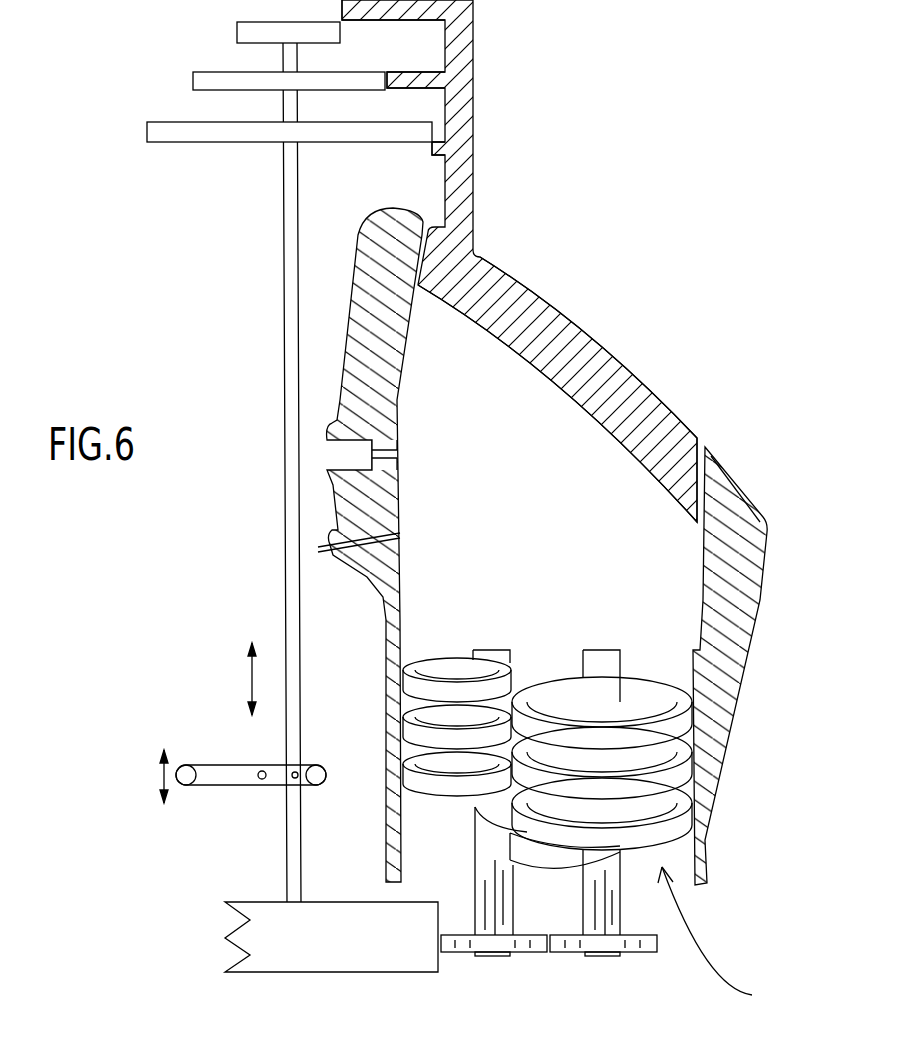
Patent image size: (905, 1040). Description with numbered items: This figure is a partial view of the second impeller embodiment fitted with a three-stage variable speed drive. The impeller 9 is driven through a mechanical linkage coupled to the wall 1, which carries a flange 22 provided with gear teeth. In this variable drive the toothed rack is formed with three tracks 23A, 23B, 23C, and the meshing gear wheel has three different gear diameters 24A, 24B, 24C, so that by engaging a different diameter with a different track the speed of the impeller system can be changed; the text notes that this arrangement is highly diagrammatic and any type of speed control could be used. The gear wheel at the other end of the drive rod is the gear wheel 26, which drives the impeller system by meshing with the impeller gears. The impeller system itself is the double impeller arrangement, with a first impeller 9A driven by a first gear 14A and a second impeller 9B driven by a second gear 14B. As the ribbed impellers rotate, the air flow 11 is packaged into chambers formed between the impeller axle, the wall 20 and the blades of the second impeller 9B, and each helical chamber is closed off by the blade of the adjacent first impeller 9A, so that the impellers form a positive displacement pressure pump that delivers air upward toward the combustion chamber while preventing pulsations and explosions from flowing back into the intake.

The wall 1 is at (565, 320).
The impeller 9 is at (581, 762).
The first impeller 9A is at (442, 667).
The second impeller 9B is at (601, 755).
The air flow 11 is at (719, 940).
The first gear 14A is at (527, 950).
The second gear 14B is at (653, 952).
The wall 20 is at (753, 590).
The flange 22 is at (462, 200).
The first track 23A is at (375, 12).
The second track 23B is at (388, 86).
The third track 23C is at (433, 155).
The first gear diameter 24A is at (243, 27).
The second gear diameter 24B is at (207, 88).
The third gear diameter 24C is at (210, 137).
The gear wheel 26 is at (280, 958).